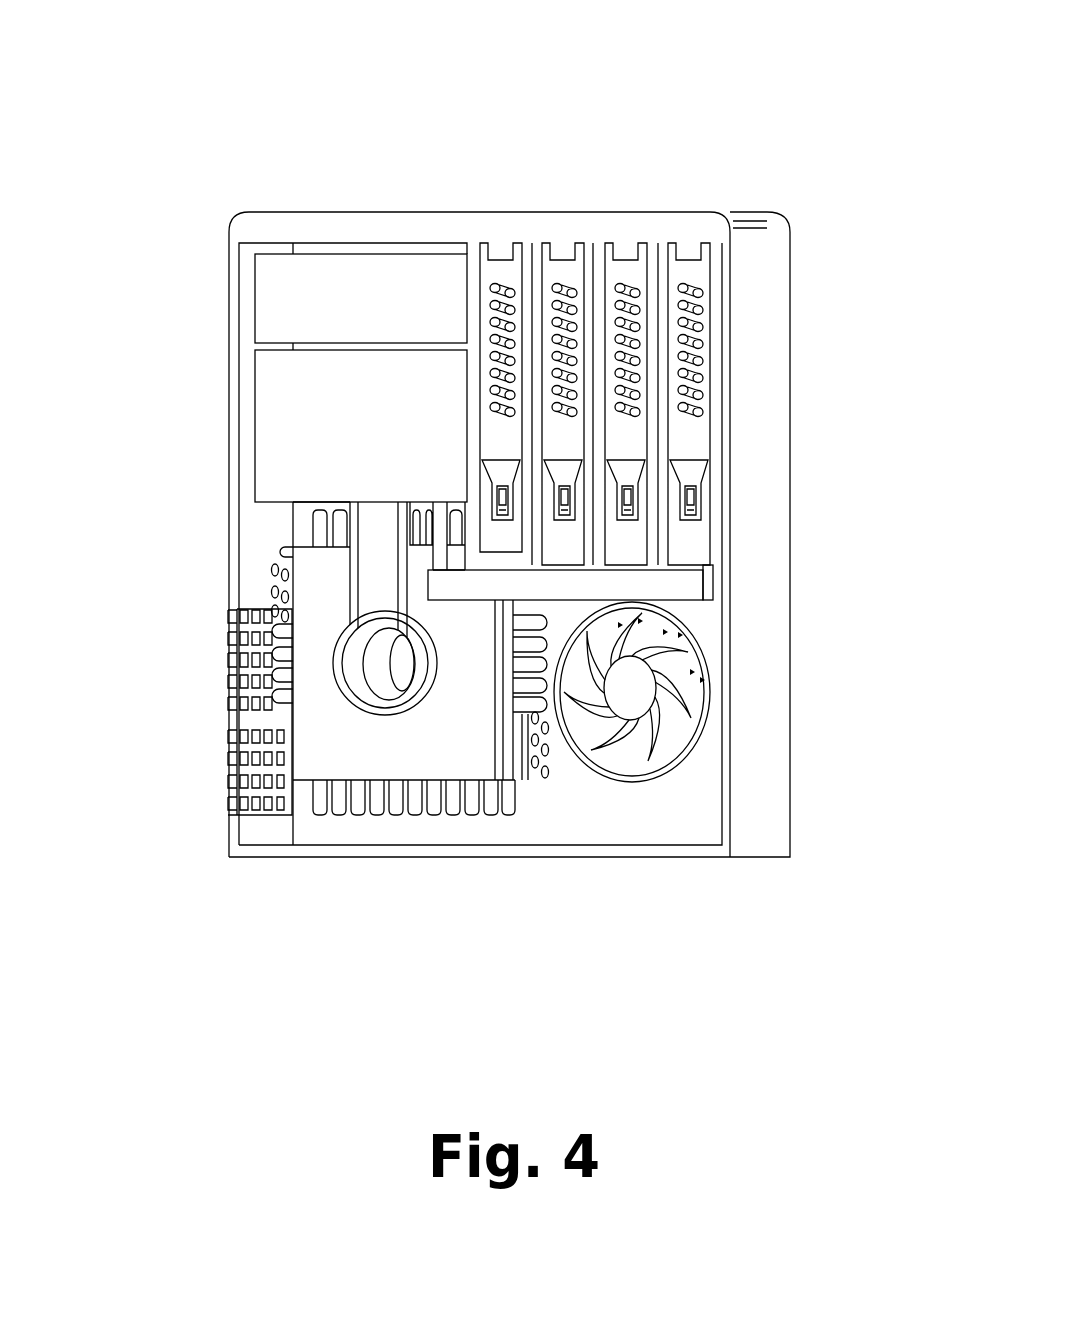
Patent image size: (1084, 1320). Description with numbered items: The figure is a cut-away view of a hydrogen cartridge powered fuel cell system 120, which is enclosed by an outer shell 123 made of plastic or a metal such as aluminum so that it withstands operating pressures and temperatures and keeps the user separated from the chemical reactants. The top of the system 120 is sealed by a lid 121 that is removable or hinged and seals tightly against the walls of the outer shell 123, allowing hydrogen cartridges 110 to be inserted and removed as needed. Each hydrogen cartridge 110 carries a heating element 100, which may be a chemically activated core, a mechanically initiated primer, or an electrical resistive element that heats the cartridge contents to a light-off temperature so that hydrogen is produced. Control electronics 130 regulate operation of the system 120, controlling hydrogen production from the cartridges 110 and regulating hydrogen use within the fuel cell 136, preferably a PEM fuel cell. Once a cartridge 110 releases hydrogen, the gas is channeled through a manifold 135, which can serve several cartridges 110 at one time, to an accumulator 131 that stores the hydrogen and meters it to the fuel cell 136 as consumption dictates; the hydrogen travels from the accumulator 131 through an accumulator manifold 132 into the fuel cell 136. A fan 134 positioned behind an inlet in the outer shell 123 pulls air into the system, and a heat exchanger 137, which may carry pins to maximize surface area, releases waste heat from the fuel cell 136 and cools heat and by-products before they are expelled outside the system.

The hydrogen cartridge powered fuel cell system 120 is at (520, 450).
The lid 121 is at (395, 232).
The heating element 100 is at (701, 367).
The hydrogen cartridge 110 is at (710, 405).
The outer shell 123 is at (767, 497).
The control electronics 130 is at (347, 307).
The accumulator 131 is at (320, 450).
The accumulator manifold 132 is at (373, 607).
The fan 134 is at (652, 659).
The manifold 135 is at (525, 589).
The fuel cell 136 is at (447, 755).
The heat exchanger 137 is at (355, 800).